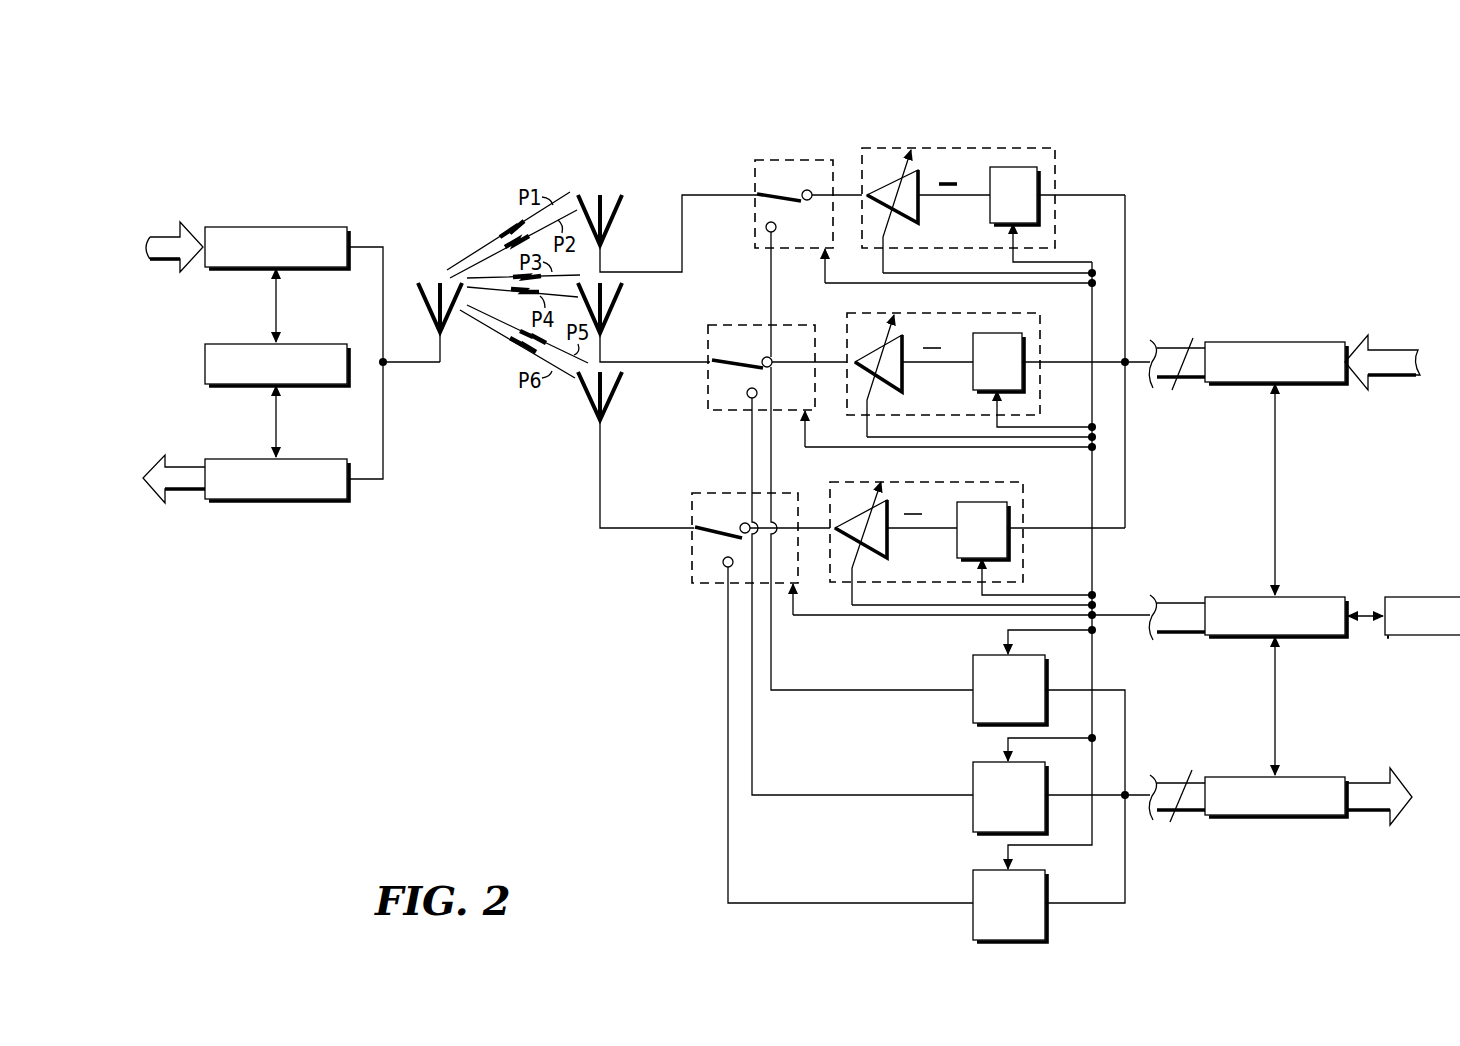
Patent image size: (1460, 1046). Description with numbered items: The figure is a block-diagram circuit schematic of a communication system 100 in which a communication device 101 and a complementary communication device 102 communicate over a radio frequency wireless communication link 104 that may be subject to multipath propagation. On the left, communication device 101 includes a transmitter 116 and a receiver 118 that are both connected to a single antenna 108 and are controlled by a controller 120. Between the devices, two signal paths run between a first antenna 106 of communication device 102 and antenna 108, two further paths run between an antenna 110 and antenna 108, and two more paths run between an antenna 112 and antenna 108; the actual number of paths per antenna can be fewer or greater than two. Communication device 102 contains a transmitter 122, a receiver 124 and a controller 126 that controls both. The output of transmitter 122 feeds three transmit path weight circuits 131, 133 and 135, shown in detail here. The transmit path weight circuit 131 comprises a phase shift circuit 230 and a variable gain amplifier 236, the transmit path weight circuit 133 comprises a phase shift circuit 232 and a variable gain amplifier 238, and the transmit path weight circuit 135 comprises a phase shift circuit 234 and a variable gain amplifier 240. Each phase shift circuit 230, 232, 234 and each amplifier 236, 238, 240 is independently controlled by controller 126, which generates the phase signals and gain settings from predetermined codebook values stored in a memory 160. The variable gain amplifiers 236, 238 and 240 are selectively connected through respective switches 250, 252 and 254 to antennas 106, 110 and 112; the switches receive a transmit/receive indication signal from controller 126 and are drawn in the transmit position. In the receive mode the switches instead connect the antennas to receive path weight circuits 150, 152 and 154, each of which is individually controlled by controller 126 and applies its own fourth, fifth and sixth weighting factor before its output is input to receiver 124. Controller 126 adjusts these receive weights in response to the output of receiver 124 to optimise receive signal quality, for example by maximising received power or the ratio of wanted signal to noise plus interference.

The communication system 100 is at (850, 130).
The communication device 101 is at (233, 182).
The communication device 102 is at (1094, 140).
The communication link 104 is at (582, 148).
The first antenna 106 is at (607, 230).
The antenna 108 is at (420, 300).
The antenna 110 is at (607, 318).
The antenna 112 is at (607, 408).
The transmitter 116 is at (271, 226).
The receiver 118 is at (268, 502).
The controller 120 is at (205, 351).
The transmitter 122 is at (1274, 345).
The receiver 124 is at (1283, 818).
The controller 126 is at (1335, 637).
The transmit path weight circuit 131 is at (983, 148).
The transmit path weight circuit 133 is at (1042, 338).
The transmit path weight circuit 135 is at (1023, 505).
The receive path weight circuit 150 is at (973, 668).
The receive path weight circuit 152 is at (973, 775).
The receive path weight circuit 154 is at (973, 883).
The memory 160 is at (1412, 637).
The phase shift circuit 230 is at (1039, 211).
The phase shift circuit 232 is at (1026, 378).
The phase shift circuit 234 is at (1010, 545).
The variable gain amplifier 236 is at (921, 217).
The variable gain amplifier 238 is at (905, 385).
The variable gain amplifier 240 is at (890, 545).
The switch 250 is at (787, 160).
The switch 252 is at (732, 325).
The switch 254 is at (717, 493).